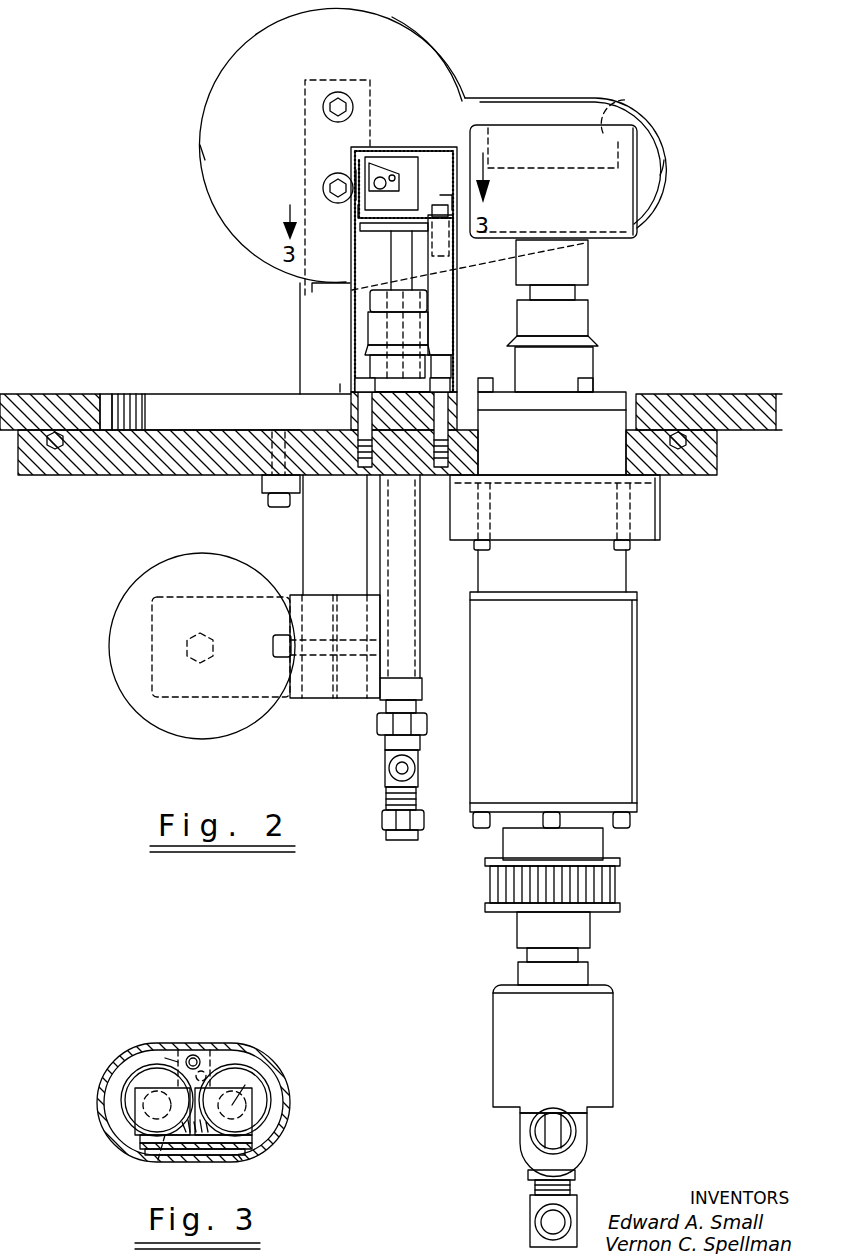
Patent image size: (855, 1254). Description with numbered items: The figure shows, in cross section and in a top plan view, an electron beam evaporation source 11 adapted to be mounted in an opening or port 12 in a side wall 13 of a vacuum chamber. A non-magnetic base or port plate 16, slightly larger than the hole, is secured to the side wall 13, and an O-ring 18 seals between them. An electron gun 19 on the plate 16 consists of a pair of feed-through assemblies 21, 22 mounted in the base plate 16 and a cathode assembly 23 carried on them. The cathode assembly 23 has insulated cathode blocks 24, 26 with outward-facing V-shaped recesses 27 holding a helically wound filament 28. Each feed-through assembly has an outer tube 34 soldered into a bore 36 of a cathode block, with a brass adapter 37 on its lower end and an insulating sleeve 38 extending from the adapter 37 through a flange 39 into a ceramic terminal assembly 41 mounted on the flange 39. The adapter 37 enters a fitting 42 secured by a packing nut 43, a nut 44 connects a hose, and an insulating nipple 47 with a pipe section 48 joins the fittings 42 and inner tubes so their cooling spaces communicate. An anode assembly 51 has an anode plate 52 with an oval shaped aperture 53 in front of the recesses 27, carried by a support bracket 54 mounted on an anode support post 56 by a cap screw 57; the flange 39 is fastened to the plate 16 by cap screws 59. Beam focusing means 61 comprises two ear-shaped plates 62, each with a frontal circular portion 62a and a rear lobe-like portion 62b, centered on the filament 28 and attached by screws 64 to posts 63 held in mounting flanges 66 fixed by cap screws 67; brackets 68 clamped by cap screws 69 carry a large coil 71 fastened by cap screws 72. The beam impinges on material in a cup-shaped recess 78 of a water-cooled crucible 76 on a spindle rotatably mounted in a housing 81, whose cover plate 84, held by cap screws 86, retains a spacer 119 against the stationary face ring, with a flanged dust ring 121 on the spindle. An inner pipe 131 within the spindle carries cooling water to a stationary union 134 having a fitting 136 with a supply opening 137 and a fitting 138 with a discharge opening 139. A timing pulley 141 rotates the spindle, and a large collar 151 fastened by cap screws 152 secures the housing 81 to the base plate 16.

In FIG. 2, the electron beam evaporation source 11 is at (115, 803).
In FIG. 2, the opening or port 12 is at (105, 398).
In FIG. 2, the side wall 13 is at (742, 400).
In FIG. 2, the base or port plate 16 is at (125, 480).
In FIG. 2, the O-ring 18 is at (58, 432).
In FIG. 2, the electron gun 19 is at (460, 80).
In FIG. 2, the feed-through assembly 21 is at (367, 530).
In FIG. 3, the feed-through assembly 21 is at (120, 1082).
In FIG. 3, the feed-through assembly 22 is at (260, 1078).
In FIG. 2, the cathode assembly 23 is at (444, 142).
In FIG. 3, the cathode assembly 23 is at (247, 1044).
In FIG. 2, the cathode block 24 is at (387, 160).
In FIG. 3, the cathode block 24 is at (142, 1125).
In FIG. 3, the cathode block 26 is at (252, 1128).
In FIG. 2, the V-shaped recess 27 is at (392, 172).
In FIG. 2, the filament 28 is at (370, 153).
In FIG. 3, the filament 28 is at (206, 1156).
In FIG. 2, the outer tube 34 is at (395, 248).
In FIG. 3, the outer tube 34 is at (158, 1138).
In FIG. 3, the bore 36 is at (238, 1083).
In FIG. 2, the brass adapter 37 is at (422, 692).
In FIG. 2, the sleeve 38 is at (406, 620).
In FIG. 2, the flange 39 is at (398, 405).
In FIG. 2, the ceramic terminal assembly 41 is at (370, 332).
In FIG. 2, the fitting 42 is at (385, 764).
In FIG. 2, the packing nut 43 is at (378, 724).
In FIG. 2, the nut 44 is at (383, 819).
In FIG. 2, the nipple 47 is at (415, 770).
In FIG. 2, the pipe section 48 is at (418, 782).
In FIG. 2, the anode assembly 51 is at (352, 177).
In FIG. 3, the anode assembly 51 is at (179, 1146).
In FIG. 2, the anode plate 52 is at (357, 210).
In FIG. 3, the anode plate 52 is at (238, 1156).
In FIG. 3, the oval shaped aperture 53 is at (213, 1150).
In FIG. 2, the support bracket 54 is at (378, 228).
In FIG. 3, the support bracket 54 is at (178, 1060).
In FIG. 2, the anode support post 56 is at (446, 312).
In FIG. 3, the anode support post 56 is at (212, 1062).
In FIG. 2, the cap screw 57 is at (446, 210).
In FIG. 3, the cap screw 57 is at (194, 1054).
In FIG. 2, the cap screws 59 is at (342, 388).
In FIG. 2, the beam focusing means 61 is at (208, 232).
In FIG. 2, the ear-shaped plate 62 is at (316, 187).
In FIG. 2, the frontal circular portion 62a is at (217, 133).
In FIG. 2, the rear lobe-like portion 62b is at (670, 163).
In FIG. 2, the pole piece or post 63 is at (318, 300).
In FIG. 2, the screws 64 is at (345, 93).
In FIG. 2, the mounting flange 66 is at (260, 486).
In FIG. 2, the cap screws 67 is at (268, 501).
In FIG. 2, the bracket 68 is at (284, 700).
In FIG. 2, the cap screws 69 is at (272, 652).
In FIG. 2, the coil 71 is at (122, 694).
In FIG. 2, the cap screws 72 is at (198, 660).
In FIG. 2, the crucible 76 is at (642, 150).
In FIG. 2, the cup-shaped recess 78 is at (622, 98).
In FIG. 2, the housing 81 is at (640, 745).
In FIG. 2, the cover plate 84 is at (580, 370).
In FIG. 2, the cap screws 86 is at (520, 385).
In FIG. 2, the spacer 119 is at (600, 398).
In FIG. 2, the flanged dust ring 121 is at (592, 334).
In FIG. 2, the inner pipe 131 is at (552, 1133).
In FIG. 2, the stationary union 134 is at (553, 1049).
In FIG. 2, the fitting 136 is at (587, 1160).
In FIG. 2, the opening 137 is at (570, 1133).
In FIG. 2, the fitting 138 is at (530, 1208).
In FIG. 2, the opening 139 is at (558, 1226).
In FIG. 2, the timing pulley 141 is at (625, 888).
In FIG. 2, the collar 151 is at (660, 516).
In FIG. 2, the cap screws 152 is at (492, 552).